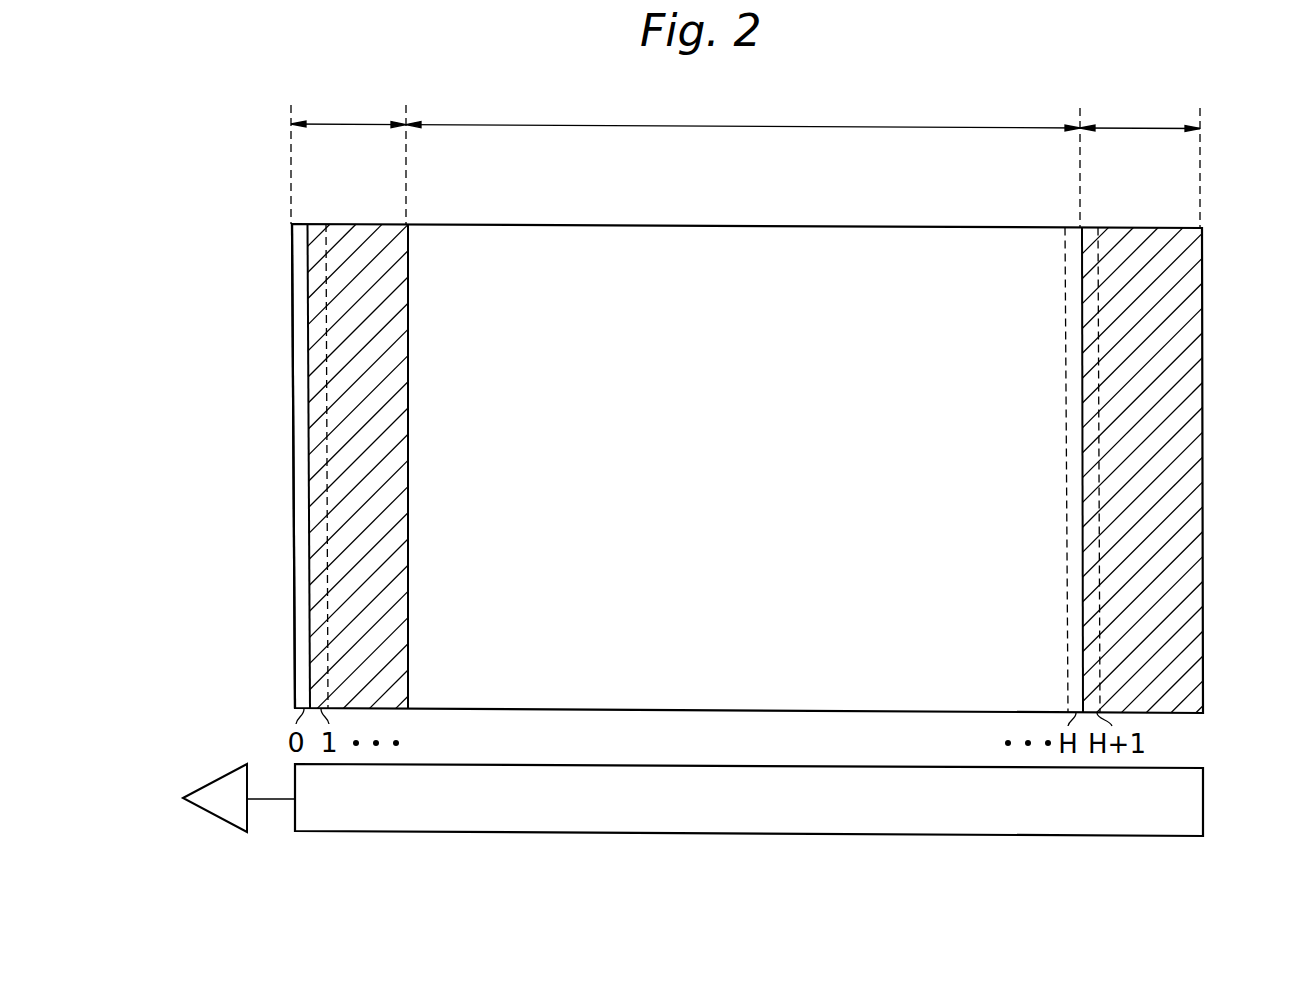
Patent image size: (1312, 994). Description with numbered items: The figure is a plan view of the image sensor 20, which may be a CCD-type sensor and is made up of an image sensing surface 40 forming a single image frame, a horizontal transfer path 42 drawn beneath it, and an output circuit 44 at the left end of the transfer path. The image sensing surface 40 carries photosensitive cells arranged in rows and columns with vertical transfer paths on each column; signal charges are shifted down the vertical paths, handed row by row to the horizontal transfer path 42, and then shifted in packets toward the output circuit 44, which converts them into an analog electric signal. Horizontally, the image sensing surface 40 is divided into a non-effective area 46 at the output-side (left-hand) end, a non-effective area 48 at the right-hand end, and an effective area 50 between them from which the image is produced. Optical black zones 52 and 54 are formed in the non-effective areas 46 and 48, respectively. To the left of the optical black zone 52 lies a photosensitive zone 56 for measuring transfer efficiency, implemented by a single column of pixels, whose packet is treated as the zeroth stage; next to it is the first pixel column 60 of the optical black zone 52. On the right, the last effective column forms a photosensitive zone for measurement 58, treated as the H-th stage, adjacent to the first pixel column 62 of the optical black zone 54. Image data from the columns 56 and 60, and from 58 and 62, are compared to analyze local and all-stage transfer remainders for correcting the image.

The image sensor 20 is at (130, 833).
The image sensing surface 40 is at (1204, 662).
The horizontal transfer path 42 is at (1204, 802).
The output circuit 44 is at (224, 780).
The non-effective area 46 is at (341, 124).
The non-effective area 48 is at (1132, 128).
The effective area 50 is at (723, 126).
The optical black zone 52 is at (397, 376).
The optical black zone 54 is at (1185, 381).
The photosensitive zone for measuring transfer efficiency 56 is at (298, 376).
The photosensitive zone for measurement 58 is at (1065, 228).
The first pixel column of the optical black area 60 is at (317, 224).
The first pixel column of the optical black area 62 is at (1097, 228).